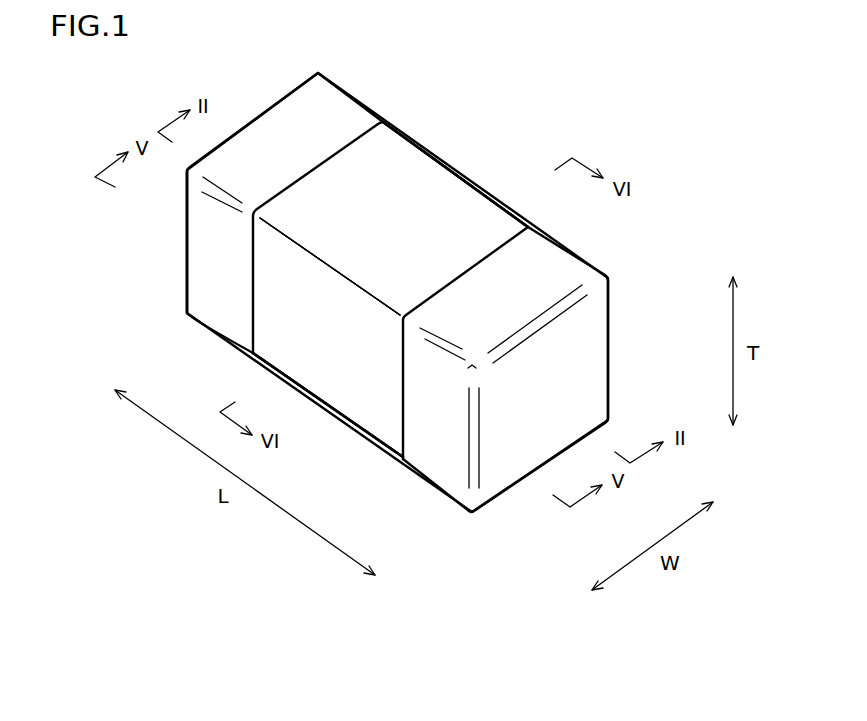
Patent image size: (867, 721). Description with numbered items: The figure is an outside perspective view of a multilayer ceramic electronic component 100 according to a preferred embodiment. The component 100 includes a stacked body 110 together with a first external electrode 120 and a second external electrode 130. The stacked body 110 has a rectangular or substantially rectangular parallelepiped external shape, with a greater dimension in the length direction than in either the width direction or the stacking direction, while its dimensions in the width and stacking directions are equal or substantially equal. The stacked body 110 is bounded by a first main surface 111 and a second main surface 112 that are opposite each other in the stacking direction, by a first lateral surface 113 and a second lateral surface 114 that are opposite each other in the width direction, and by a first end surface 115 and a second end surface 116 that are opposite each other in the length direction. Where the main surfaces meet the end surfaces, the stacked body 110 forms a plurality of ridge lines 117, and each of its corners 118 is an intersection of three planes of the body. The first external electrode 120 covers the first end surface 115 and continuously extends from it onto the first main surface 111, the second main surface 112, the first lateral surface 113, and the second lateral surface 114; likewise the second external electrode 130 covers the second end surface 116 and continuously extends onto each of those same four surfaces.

The multilayer ceramic electronic component 100 is at (632, 140).
The stacked body 110 is at (435, 188).
The first main surface 111 is at (397, 173).
The second main surface 112 is at (375, 408).
The first lateral surface 113 is at (342, 385).
The second lateral surface 114 is at (485, 222).
The first end surface 115 is at (520, 430).
The second end surface 116 is at (258, 160).
The ridge lines 117 is at (547, 318).
The corners 118 is at (612, 272).
The first external electrode 120 is at (552, 262).
The second external electrode 130 is at (332, 110).